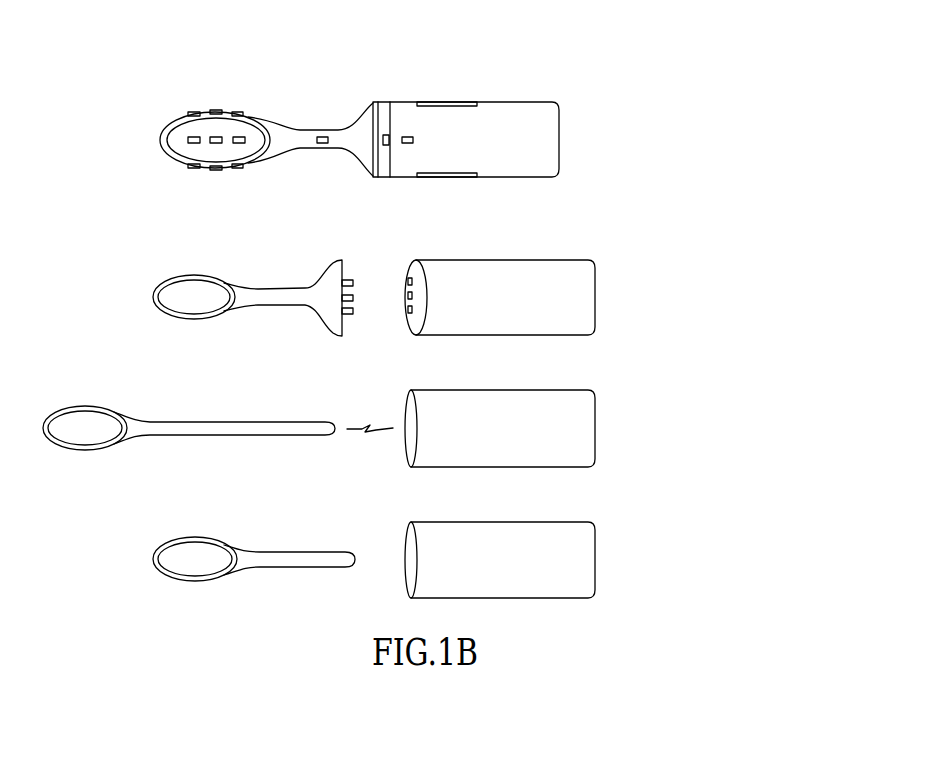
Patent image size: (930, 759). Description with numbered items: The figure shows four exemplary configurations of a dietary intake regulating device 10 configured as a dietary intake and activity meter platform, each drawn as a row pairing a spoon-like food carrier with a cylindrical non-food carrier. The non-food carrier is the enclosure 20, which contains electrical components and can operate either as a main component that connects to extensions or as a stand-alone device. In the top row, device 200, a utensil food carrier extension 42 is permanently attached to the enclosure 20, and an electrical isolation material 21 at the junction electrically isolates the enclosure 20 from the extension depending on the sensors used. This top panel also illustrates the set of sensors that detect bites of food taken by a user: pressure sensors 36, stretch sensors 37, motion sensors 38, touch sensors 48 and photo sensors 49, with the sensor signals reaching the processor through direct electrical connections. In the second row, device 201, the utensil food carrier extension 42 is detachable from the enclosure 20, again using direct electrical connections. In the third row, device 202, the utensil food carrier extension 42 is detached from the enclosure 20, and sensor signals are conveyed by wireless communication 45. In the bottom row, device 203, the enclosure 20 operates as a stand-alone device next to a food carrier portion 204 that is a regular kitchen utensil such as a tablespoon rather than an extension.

The dietary intake regulating device 10 is at (636, 78).
The enclosure 20 is at (515, 102).
The electrical isolation material 21 is at (378, 102).
The pressure sensors 36 is at (445, 102).
The stretch sensors 37 is at (383, 143).
The motion sensors 38 is at (321, 136).
The utensil food carrier extension 42 is at (362, 107).
The wireless communication 45 is at (364, 428).
The touch sensors 48 is at (238, 137).
The photo sensors 49 is at (238, 111).
The device with permanently attached extension 200 is at (609, 120).
The device with detachable extension 201 is at (639, 287).
The device with detached extension 202 is at (639, 416).
The stand-alone device 203 is at (639, 547).
The food carrier portion 204 is at (277, 552).